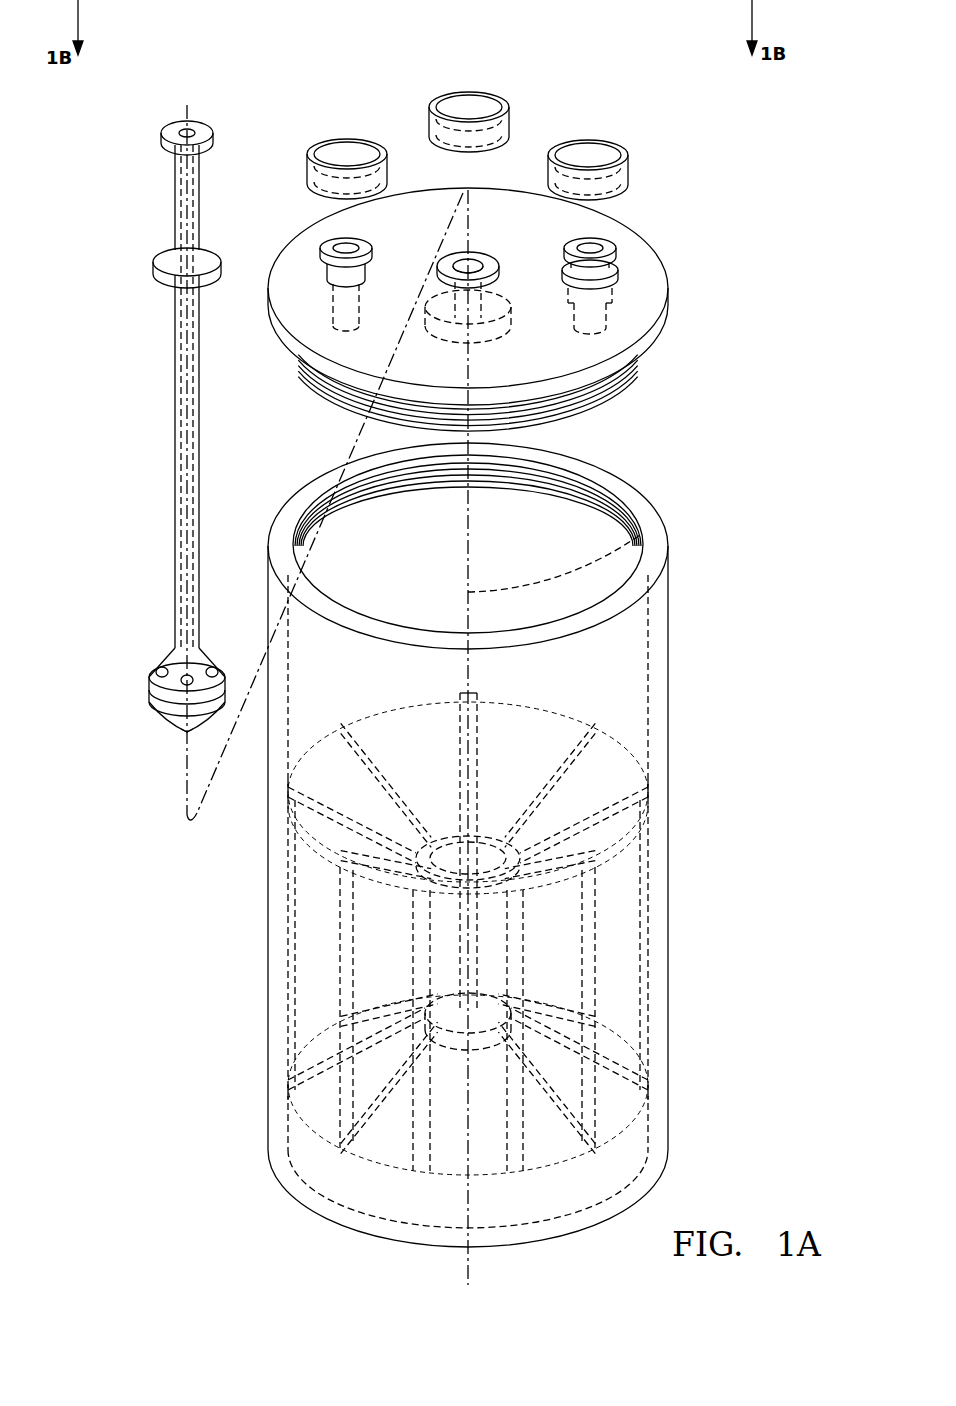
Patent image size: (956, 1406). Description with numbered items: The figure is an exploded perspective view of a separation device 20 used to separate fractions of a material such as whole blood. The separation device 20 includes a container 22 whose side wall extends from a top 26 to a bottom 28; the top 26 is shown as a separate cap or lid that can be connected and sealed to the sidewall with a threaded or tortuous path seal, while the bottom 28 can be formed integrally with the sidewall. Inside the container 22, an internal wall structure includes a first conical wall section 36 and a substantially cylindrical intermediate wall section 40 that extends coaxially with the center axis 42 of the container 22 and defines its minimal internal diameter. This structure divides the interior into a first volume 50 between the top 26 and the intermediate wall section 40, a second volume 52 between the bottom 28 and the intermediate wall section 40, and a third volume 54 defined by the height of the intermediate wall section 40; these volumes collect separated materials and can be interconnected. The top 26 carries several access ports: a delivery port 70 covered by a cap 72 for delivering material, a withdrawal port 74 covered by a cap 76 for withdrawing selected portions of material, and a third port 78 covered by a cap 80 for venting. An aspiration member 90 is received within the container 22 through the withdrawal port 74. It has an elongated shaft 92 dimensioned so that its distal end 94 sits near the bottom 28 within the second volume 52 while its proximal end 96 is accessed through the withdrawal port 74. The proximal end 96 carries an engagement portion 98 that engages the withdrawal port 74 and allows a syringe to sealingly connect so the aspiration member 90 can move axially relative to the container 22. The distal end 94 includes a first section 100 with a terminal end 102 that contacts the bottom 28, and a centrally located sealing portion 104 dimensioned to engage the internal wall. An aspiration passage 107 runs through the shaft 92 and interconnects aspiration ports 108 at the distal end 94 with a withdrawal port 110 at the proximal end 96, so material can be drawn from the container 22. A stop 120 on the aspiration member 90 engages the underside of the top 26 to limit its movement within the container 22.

The separation device 20 is at (745, 392).
The container 22 is at (497, 845).
The top 26 is at (648, 285).
The bottom 28 is at (323, 1222).
The first conical wall section 36 is at (540, 742).
The intermediate wall section 40 is at (560, 772).
The center axis 42 is at (645, 541).
The first volume 50 is at (423, 554).
The second volume 52 is at (527, 1140).
The third volume 54 is at (490, 968).
The delivery port 70 is at (320, 256).
The cap 72 is at (353, 142).
The withdrawal port 74 is at (487, 258).
The cap 76 is at (482, 100).
The third port 78 is at (612, 255).
The cap 80 is at (601, 143).
The aspiration member 90 is at (155, 468).
The elongated shaft 92 is at (173, 343).
The distal end 94 is at (160, 697).
The proximal end 96 is at (191, 346).
The engagement portion 98 is at (195, 122).
The first section 100 is at (177, 713).
The terminal end 102 is at (186, 733).
The sealing portion 104 is at (152, 688).
The aspiration passage 107 is at (178, 528).
The aspiration ports 108 is at (157, 668).
The withdrawal port 110 is at (184, 130).
The stop 120 is at (165, 252).